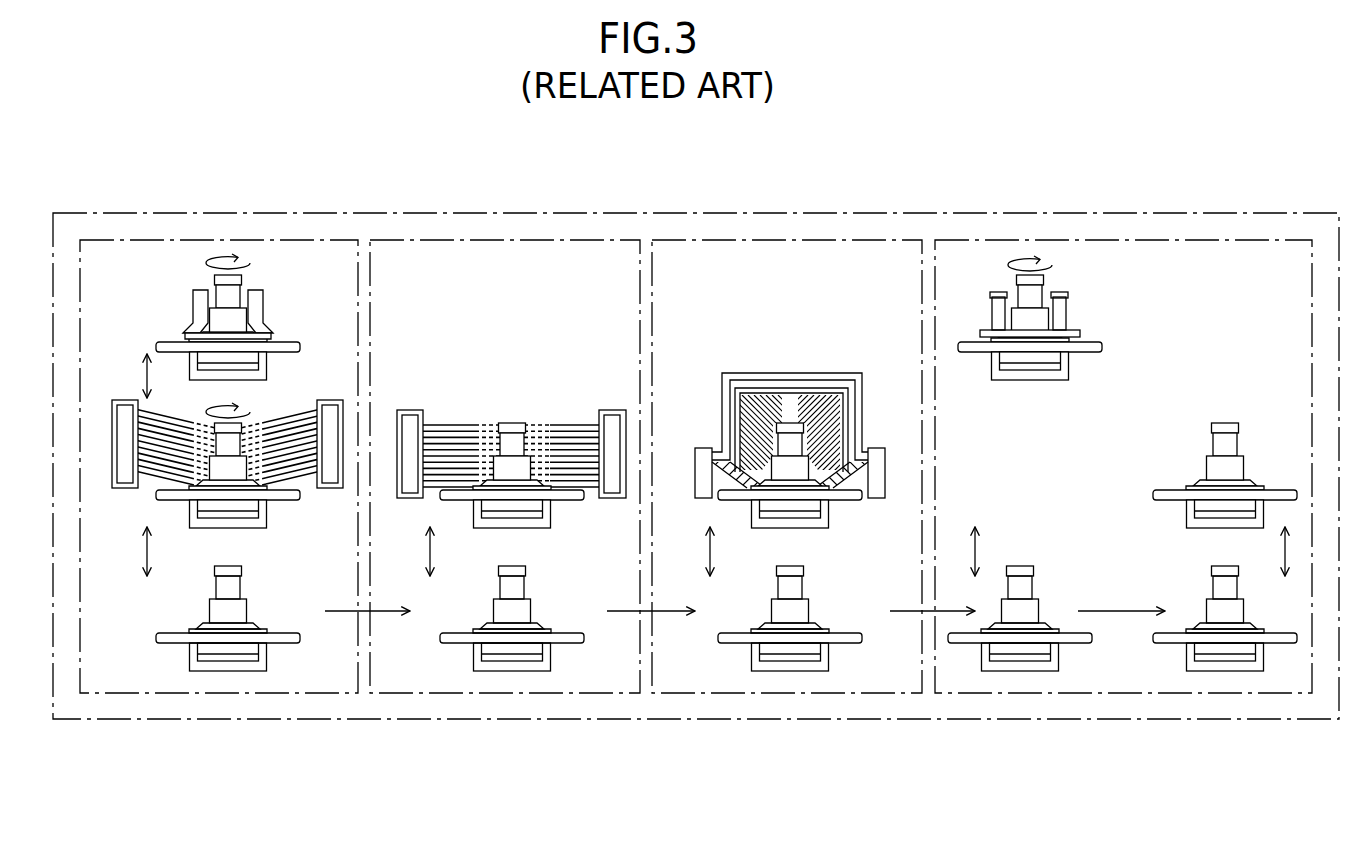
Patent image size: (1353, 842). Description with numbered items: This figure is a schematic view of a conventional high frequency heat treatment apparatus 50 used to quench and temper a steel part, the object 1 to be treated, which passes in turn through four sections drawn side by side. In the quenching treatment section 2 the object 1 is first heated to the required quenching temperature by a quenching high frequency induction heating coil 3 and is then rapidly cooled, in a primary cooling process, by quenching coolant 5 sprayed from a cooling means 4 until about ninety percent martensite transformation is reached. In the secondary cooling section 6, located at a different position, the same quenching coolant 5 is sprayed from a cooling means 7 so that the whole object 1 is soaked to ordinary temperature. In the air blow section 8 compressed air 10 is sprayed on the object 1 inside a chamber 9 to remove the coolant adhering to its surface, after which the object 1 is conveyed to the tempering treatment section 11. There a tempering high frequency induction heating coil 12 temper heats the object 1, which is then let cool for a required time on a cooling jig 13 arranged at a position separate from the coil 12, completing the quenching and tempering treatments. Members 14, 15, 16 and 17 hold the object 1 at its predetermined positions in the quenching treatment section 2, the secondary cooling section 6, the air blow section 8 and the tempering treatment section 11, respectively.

The object to be treated 1 is at (228, 300).
The quenching treatment section 2 is at (140, 662).
The quenching high frequency induction heating coil 3 is at (250, 312).
The cooling means 4 is at (334, 492).
The quenching coolant 5 is at (282, 410).
The secondary cooling section 6 is at (428, 662).
The cooling means 7 is at (612, 410).
The air blow section 8 is at (710, 662).
The chamber 9 is at (845, 378).
The compressed air 10 is at (813, 405).
The tempering treatment section 11 is at (975, 662).
The tempering high frequency induction heating coil 12 is at (1062, 318).
The cooling jig 13 is at (1185, 508).
The member for holding the object to be treated 14 is at (262, 528).
The member for holding the object to be treated 15 is at (550, 516).
The member for holding the object to be treated 16 is at (830, 516).
The member for holding the object to be treated 17 is at (1068, 367).
The high frequency heat treatment apparatus 50 is at (893, 183).